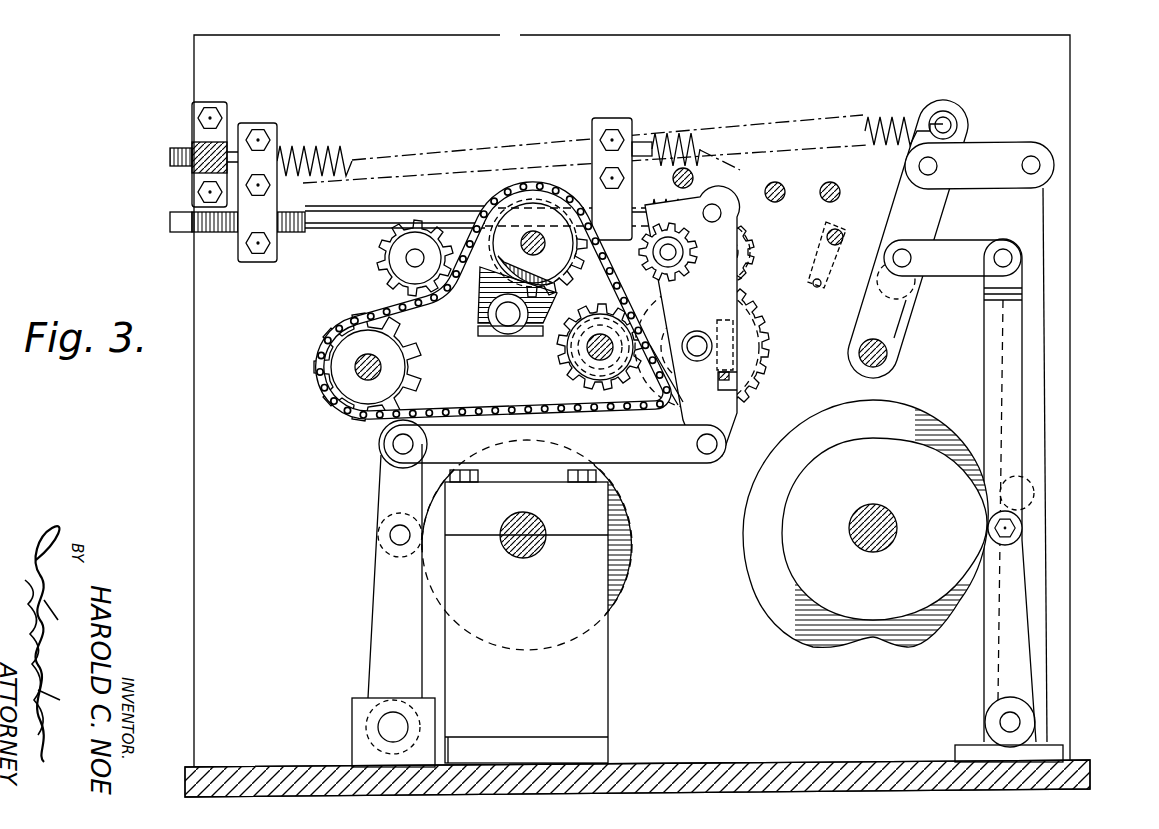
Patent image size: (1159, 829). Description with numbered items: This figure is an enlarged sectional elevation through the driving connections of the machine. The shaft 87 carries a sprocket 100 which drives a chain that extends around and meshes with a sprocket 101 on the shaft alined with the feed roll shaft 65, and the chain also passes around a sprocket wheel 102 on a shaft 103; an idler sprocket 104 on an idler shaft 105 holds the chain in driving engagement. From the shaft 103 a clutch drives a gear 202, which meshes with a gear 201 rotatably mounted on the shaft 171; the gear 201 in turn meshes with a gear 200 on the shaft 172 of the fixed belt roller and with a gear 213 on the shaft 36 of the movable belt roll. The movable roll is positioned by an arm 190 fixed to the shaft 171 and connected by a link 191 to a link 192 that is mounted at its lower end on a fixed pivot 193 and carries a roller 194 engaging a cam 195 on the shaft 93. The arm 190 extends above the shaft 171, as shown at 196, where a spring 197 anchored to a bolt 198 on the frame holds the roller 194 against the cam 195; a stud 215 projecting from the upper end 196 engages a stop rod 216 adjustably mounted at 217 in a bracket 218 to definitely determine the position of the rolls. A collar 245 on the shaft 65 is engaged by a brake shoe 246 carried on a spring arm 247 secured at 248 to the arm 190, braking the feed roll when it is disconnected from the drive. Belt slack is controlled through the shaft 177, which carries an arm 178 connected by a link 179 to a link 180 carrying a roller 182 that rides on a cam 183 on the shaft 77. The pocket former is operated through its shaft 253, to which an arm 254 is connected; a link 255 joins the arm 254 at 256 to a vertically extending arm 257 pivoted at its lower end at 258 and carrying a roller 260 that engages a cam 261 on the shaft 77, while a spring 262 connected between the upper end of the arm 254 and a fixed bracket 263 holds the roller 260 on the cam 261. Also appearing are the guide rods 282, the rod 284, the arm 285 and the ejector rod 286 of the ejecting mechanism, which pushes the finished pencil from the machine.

The bolt 198 is at (243, 157).
The spring 197 is at (338, 154).
The adjustable mounting of stop rod 217 is at (300, 214).
The stop rod 216 is at (398, 208).
The bracket 218 is at (250, 228).
The idler shaft 105 is at (408, 258).
The idler sprocket 104 is at (386, 272).
The sprocket 101 is at (523, 232).
The shaft 65 is at (538, 238).
The fixed bracket 263 is at (632, 128).
The gear 200 is at (665, 168).
The stud 215 is at (718, 200).
The upper end of arm 196 is at (722, 212).
The shaft 36 is at (742, 238).
The guide rods 282 is at (834, 184).
The rod 284 is at (840, 231).
The arm 285 is at (815, 250).
The gear 213 is at (748, 278).
The ejector rod 286 is at (815, 286).
The spring 262 is at (878, 118).
The link 255 is at (985, 150).
The connection 256 is at (1045, 168).
The arm 254 is at (918, 218).
The link 179 is at (960, 258).
The vertically extending arm 257 is at (1050, 272).
The shaft 253 is at (912, 290).
The arm 178 is at (896, 325).
The shaft 177 is at (858, 344).
The shaft 172 is at (655, 262).
The rod 171 is at (697, 331).
The collar 245 is at (500, 268).
The brake shoe 246 is at (490, 318).
The spring arm 247 is at (482, 336).
The gear 202 is at (570, 347).
The sprocket wheel 102 is at (560, 362).
The shaft 87 is at (358, 368).
The sprocket 100 is at (362, 382).
The shaft 103 is at (599, 362).
The securing point 248 is at (658, 395).
The arm 190 is at (726, 444).
The link 191 is at (692, 455).
The gear 201 is at (752, 368).
The link 180 is at (1007, 395).
The roller 260 is at (1030, 484).
The roller 182 is at (990, 532).
The link 192 is at (380, 485).
The roller 194 is at (392, 550).
The shaft 93 is at (522, 560).
The cam 195 is at (604, 598).
The cam 183 is at (805, 533).
The shaft 77 is at (866, 548).
The cam 261 is at (792, 617).
The fixed pivot 193 is at (388, 726).
The fixed pivot 258 is at (1000, 722).